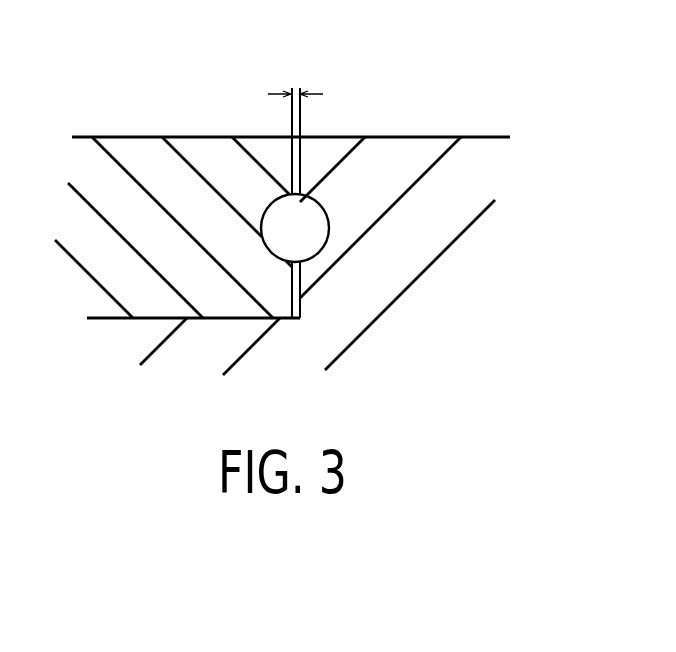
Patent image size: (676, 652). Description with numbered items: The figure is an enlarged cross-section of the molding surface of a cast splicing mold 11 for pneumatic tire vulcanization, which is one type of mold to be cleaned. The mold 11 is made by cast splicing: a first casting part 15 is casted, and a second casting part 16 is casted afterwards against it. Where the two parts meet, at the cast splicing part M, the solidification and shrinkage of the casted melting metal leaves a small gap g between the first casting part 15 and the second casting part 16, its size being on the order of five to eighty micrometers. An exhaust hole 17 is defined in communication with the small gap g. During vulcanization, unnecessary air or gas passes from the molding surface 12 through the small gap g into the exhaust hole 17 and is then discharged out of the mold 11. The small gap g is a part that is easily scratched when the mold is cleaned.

The mold 11 is at (478, 137).
The molding surface 12 is at (376, 137).
The first casting part 15 is at (428, 152).
The second casting part 16 is at (138, 150).
The exhaust hole 17 is at (324, 243).
The cast splicing part M is at (294, 168).
The small gap g is at (295, 77).